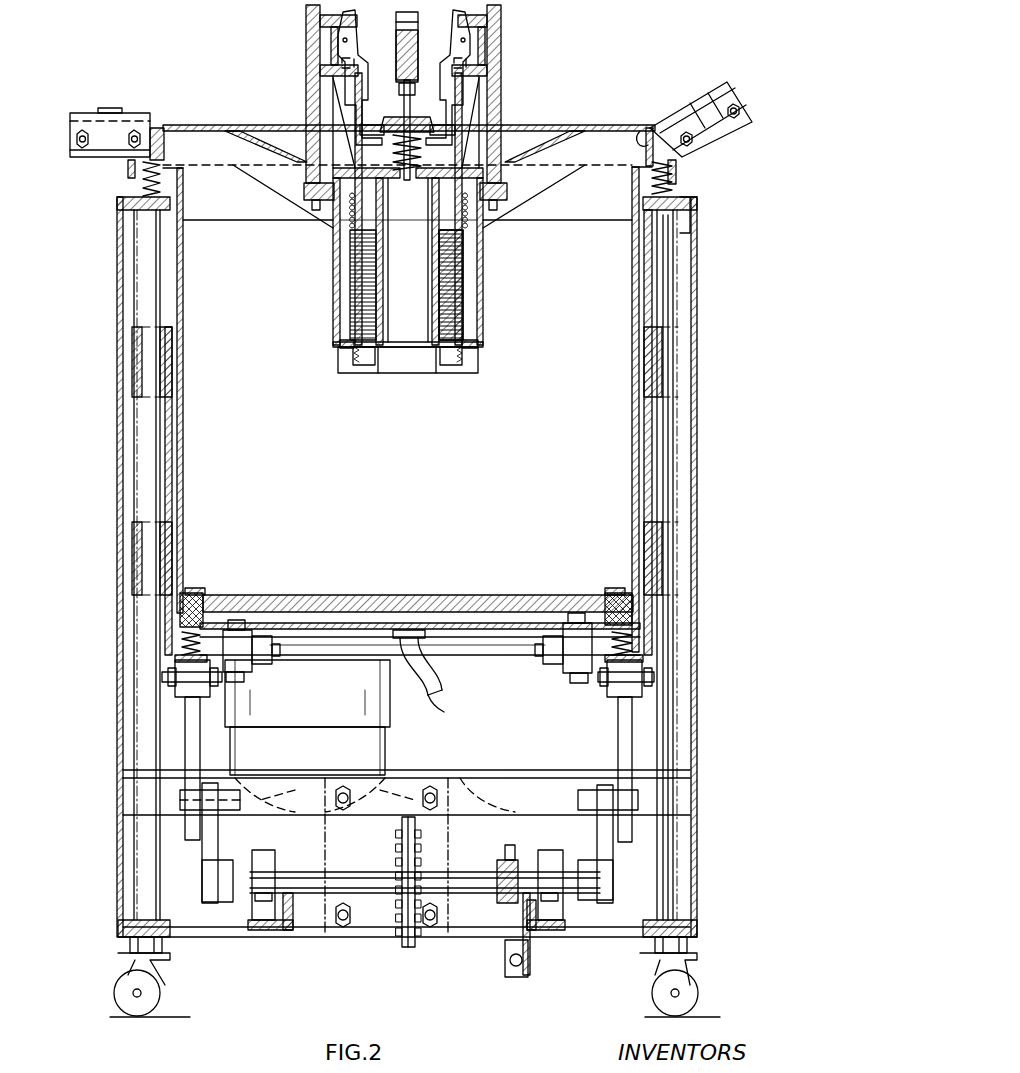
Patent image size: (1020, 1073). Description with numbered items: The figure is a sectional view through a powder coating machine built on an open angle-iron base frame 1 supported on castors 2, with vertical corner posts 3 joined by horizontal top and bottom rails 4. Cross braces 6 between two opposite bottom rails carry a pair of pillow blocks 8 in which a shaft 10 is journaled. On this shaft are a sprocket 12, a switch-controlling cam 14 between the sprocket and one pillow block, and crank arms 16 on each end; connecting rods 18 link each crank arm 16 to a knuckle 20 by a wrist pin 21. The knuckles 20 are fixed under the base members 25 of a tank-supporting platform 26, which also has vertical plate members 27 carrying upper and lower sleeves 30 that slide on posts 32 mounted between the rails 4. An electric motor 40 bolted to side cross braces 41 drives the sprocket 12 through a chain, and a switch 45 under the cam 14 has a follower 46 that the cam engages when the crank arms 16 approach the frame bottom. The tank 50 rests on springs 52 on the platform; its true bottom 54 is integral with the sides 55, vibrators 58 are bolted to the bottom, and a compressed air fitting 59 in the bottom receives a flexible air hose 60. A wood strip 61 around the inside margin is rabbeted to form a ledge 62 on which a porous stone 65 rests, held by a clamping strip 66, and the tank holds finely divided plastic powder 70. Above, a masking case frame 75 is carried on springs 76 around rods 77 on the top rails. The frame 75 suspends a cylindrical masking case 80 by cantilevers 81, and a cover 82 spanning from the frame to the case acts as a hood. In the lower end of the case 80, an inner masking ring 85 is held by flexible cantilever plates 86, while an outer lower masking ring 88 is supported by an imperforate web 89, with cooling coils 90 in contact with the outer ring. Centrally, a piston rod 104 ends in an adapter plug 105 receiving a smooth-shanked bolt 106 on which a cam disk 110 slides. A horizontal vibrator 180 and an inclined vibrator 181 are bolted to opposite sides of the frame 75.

The base frame 1 is at (700, 497).
The castors 2 is at (162, 978).
The vertical corner posts 3 is at (697, 400).
The horizontal top and bottom rails 4 is at (690, 197).
The cross braces 6 is at (289, 930).
The pillow blocks 8 is at (258, 920).
The shaft 10 is at (458, 873).
The sprocket 12 is at (402, 945).
The switch-controlling cam 14 is at (500, 905).
The crank arms 16 is at (204, 856).
The connecting rods 18 is at (185, 750).
The knuckle 20 is at (175, 668).
The wrist pin 21 is at (170, 682).
The base members 25 is at (487, 655).
The tank-supporting platform 26 is at (158, 442).
The vertical plate members 27 is at (158, 482).
The sleeves 30 is at (132, 352).
The post 32 is at (676, 432).
The electric motor 40 is at (388, 752).
The side cross braces 41 is at (500, 778).
The switch 45 is at (520, 975).
The follower 46 is at (507, 950).
The tank 50 is at (645, 280).
The springs 52 is at (640, 640).
The bottom 54 is at (355, 655).
The sides 55 is at (662, 304).
The vibrators 58 is at (248, 672).
The compressed air fitting 59 is at (428, 652).
The flexible air hose 60 is at (430, 700).
The wood strip 61 is at (620, 612).
The stone-supported ledge 62 is at (200, 598).
The porous stone 65 is at (443, 592).
The clamping strip 66 is at (205, 588).
The plastic powder 70 is at (200, 270).
The masking case frame 75 is at (643, 130).
The springs 76 is at (678, 176).
The rods 77 is at (142, 185).
The masking case 80 is at (483, 285).
The cantilevers 81 is at (245, 183).
The cover 82 is at (187, 127).
The inner masking ring 85 is at (386, 374).
The cantilever plates 86 is at (478, 366).
The outer lower masking ring 88 is at (466, 374).
The imperforate web 89 is at (465, 338).
The cooling coils 90 is at (338, 354).
The piston rod 104 is at (418, 22).
The adapter plug 105 is at (398, 64).
The smooth-shanked bolt 106 is at (420, 148).
The cam disk 110 is at (425, 120).
The vibrator 180 is at (80, 112).
The vibrator 181 is at (727, 92).